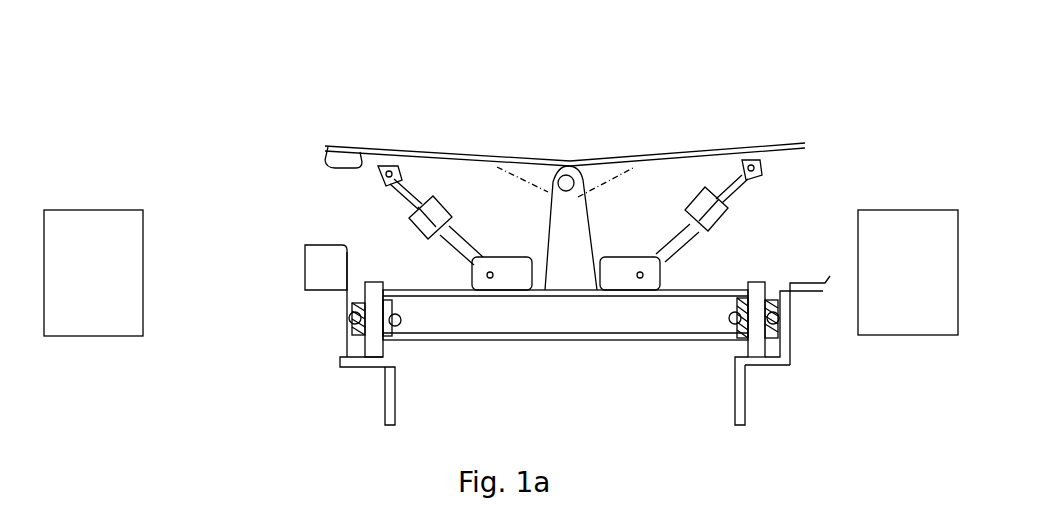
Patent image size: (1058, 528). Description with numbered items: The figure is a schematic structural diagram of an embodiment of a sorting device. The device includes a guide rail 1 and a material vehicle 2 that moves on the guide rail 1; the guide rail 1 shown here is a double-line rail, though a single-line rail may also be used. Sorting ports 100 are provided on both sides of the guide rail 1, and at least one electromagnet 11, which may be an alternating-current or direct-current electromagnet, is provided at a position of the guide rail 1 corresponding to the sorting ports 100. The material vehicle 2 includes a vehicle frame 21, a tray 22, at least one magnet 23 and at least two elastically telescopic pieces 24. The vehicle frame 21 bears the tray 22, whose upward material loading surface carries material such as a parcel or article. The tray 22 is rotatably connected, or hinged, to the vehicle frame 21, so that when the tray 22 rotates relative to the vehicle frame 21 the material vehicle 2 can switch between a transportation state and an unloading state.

The guide rail 1 is at (350, 358).
The electromagnet 11 is at (330, 270).
The material vehicle 2 is at (680, 322).
The vehicle frame 21 is at (570, 220).
The tray 22 is at (458, 157).
The magnet 23 is at (325, 152).
The elastically telescopic piece 24 is at (398, 178).
The sorting port 100 is at (111, 283).